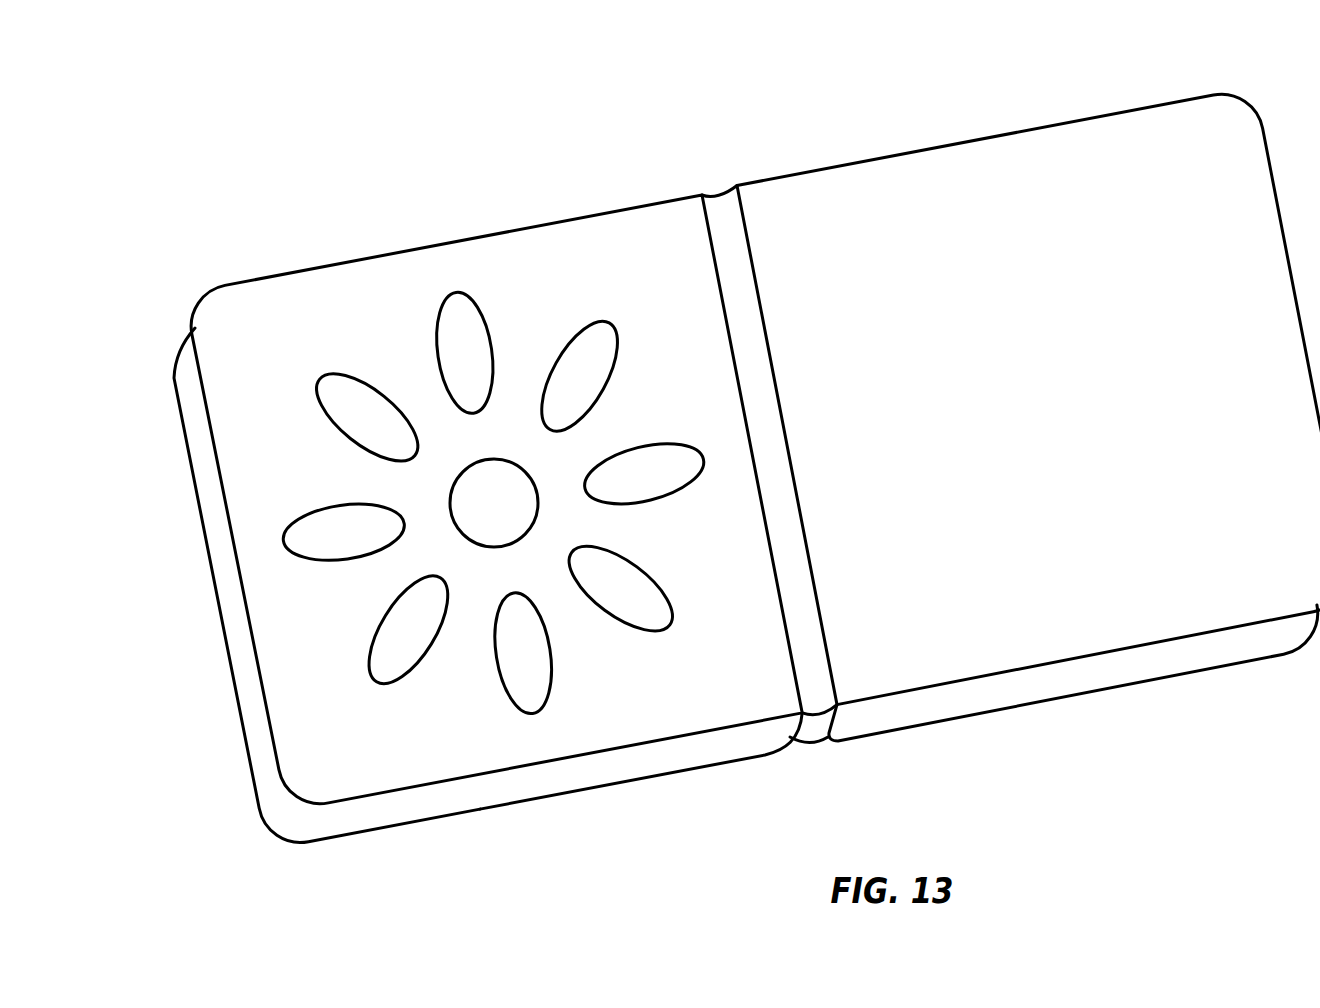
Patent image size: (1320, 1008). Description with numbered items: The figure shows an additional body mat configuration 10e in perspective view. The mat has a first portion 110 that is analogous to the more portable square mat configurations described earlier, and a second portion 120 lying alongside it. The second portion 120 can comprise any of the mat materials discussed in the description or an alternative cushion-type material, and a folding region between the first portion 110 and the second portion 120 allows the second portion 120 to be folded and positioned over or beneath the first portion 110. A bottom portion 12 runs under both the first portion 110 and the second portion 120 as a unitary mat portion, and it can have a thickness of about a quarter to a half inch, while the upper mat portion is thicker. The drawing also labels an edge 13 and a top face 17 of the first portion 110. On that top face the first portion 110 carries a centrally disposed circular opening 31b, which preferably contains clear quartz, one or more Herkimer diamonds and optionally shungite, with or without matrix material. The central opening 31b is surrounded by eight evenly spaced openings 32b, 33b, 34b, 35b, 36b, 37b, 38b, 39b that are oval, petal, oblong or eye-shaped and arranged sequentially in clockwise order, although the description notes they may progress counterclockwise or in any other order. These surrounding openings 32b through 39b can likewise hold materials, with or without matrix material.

The mat configuration 10e is at (737, 451).
The first portion 110 is at (478, 503).
The second portion 120 is at (1024, 375).
The bottom portion 12 is at (369, 819).
The bottom edge 13 is at (622, 785).
The front surface 17 is at (297, 641).
The centrally disposed opening 31b is at (515, 518).
The surrounding opening 32b is at (482, 361).
The surrounding opening 33b is at (595, 390).
The surrounding opening 34b is at (663, 487).
The surrounding opening 35b is at (642, 602).
The surrounding opening 36b is at (543, 664).
The surrounding opening 37b is at (428, 642).
The surrounding opening 38b is at (360, 548).
The surrounding opening 39b is at (386, 430).